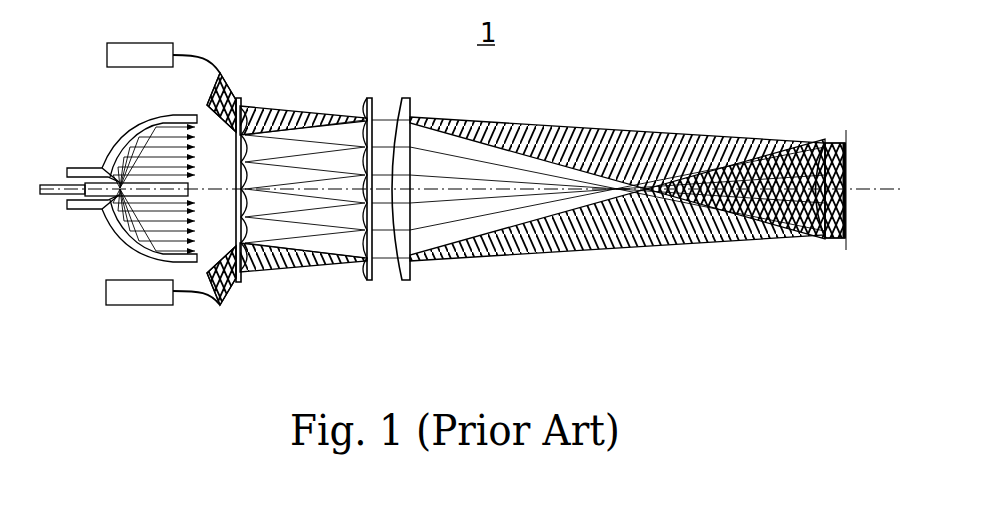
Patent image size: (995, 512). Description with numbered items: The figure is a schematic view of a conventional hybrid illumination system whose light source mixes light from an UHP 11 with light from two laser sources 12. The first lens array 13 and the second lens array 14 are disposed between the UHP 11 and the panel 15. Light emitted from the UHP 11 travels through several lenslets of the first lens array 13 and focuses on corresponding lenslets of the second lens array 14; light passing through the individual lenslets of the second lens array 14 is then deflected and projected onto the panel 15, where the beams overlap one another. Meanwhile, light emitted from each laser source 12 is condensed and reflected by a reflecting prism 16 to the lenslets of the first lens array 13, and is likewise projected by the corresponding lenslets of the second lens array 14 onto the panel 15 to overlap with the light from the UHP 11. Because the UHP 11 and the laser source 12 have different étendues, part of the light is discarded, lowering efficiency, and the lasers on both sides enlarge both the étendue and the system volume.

The UHP 11 is at (120, 234).
The laser source 12 is at (135, 68).
The first lens array 13 is at (236, 282).
The second lens array 14 is at (374, 280).
The panel 15 is at (848, 207).
The reflecting prism 16 is at (230, 100).